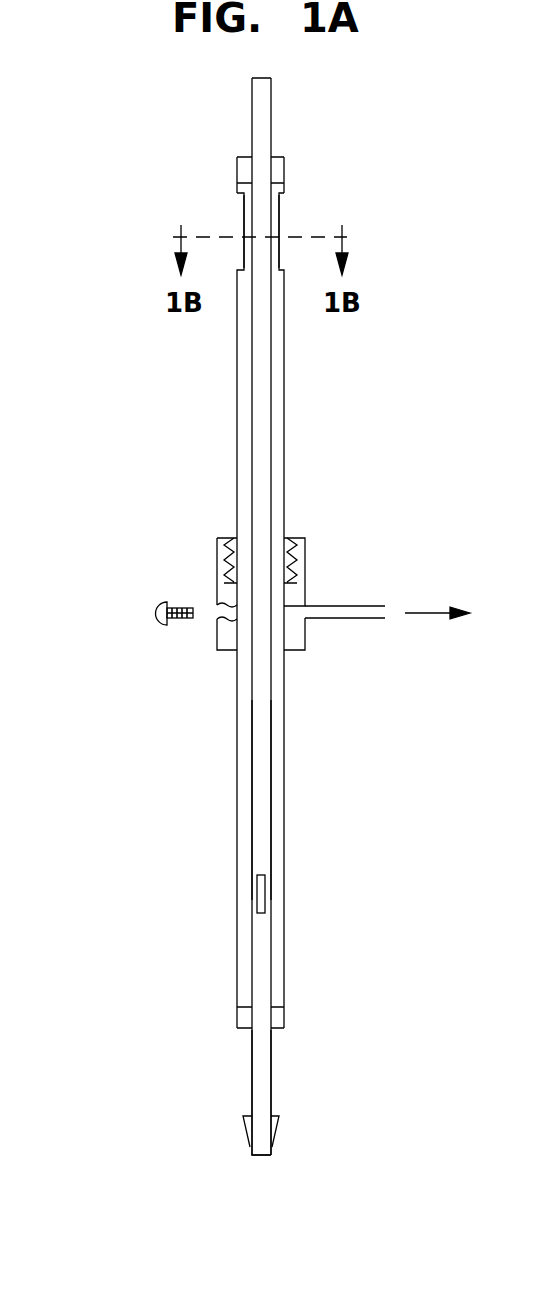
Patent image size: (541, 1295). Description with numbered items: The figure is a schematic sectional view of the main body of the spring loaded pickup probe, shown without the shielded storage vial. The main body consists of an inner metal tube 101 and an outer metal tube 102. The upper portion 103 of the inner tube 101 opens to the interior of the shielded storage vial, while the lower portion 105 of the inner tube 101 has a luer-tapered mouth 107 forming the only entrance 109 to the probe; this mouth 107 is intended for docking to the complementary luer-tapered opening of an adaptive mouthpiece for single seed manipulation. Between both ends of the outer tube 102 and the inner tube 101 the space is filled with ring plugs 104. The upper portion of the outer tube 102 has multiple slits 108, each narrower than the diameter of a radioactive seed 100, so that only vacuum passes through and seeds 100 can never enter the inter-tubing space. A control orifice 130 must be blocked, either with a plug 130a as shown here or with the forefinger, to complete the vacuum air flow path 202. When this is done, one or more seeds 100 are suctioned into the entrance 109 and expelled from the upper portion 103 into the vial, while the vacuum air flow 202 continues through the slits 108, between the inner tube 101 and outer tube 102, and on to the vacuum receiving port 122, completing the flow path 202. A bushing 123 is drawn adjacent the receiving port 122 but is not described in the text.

The radioactive seed 100 is at (265, 893).
The inner metal tube 101 is at (276, 835).
The outer metal tube 102 is at (284, 777).
The upper portion of the inner tube 103 is at (271, 97).
The ring plug 104 is at (285, 167).
The lower portion of the inner tube 105 is at (271, 1075).
The luer-tapered mouth 107 is at (273, 1133).
The slit 108 is at (278, 210).
The entrance 109 is at (257, 1157).
The vacuum receiving port 122 is at (363, 607).
The threaded bushing 123 is at (305, 564).
The control orifice 130 is at (215, 612).
The plug 130a is at (157, 610).
The vacuum airflow path 202 is at (467, 615).